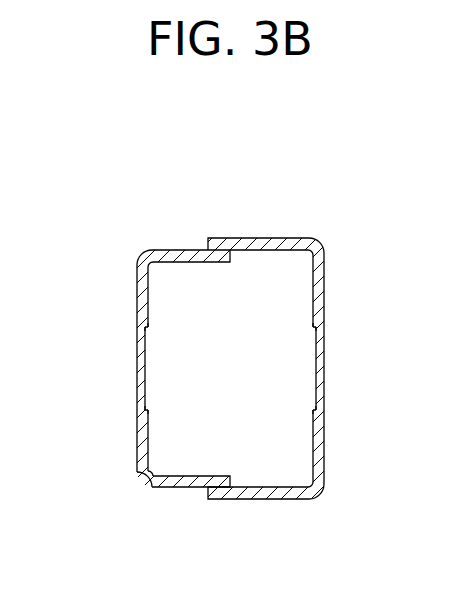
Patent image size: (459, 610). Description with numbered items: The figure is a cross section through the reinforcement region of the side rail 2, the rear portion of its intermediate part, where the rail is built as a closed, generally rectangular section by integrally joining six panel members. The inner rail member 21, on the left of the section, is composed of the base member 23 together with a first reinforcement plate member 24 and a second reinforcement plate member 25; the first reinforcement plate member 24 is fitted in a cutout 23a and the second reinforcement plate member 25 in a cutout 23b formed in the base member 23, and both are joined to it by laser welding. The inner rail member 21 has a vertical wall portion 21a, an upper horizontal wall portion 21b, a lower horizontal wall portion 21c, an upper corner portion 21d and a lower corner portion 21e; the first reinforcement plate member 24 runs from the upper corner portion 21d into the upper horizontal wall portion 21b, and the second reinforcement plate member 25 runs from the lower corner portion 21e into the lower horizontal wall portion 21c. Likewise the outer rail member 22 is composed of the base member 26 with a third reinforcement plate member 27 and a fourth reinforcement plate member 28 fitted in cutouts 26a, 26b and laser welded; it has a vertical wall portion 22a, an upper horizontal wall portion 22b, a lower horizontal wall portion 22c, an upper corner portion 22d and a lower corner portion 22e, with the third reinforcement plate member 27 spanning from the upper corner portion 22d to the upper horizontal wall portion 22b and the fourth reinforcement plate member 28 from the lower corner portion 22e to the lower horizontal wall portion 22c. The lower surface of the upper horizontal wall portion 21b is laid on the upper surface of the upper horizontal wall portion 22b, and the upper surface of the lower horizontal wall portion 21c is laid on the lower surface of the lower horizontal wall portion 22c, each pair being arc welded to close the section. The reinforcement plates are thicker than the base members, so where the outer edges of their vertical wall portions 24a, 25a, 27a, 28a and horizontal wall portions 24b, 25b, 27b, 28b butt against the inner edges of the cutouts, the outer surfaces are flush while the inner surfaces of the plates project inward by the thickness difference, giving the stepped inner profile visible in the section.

The side rail 2 is at (156, 158).
The inner rail member 21 is at (390, 325).
The vertical wall portion 21a is at (315, 383).
The upper horizontal wall portion 21b is at (280, 238).
The lower horizontal wall portion 21c is at (264, 500).
The upper corner portion 21d is at (324, 246).
The lower corner portion 21e is at (324, 490).
The outer rail member 22 is at (70, 323).
The vertical wall portion 22a is at (146, 365).
The upper horizontal wall portion 22b is at (181, 250).
The lower horizontal wall portion 22c is at (172, 488).
The upper corner portion 22d is at (137, 256).
The lower corner portion 22e is at (143, 489).
The base member 23 is at (324, 361).
The cutout 23a is at (312, 327).
The cutout 23b is at (312, 411).
The first reinforcement plate member 24 is at (324, 323).
The vertical wall portion 24a is at (324, 295).
The horizontal wall portion 24b is at (258, 244).
The second reinforcement plate member 25 is at (324, 440).
The vertical wall portion 25a is at (324, 462).
The horizontal wall portion 25b is at (258, 493).
The base member 26 is at (137, 361).
The cutout 26a is at (149, 327).
The cutout 26b is at (149, 411).
The third reinforcement plate member 27 is at (137, 323).
The vertical wall portion 27a is at (137, 302).
The horizontal wall portion 27b is at (191, 256).
The fourth reinforcement plate member 28 is at (137, 440).
The vertical wall portion 28a is at (137, 458).
The horizontal wall portion 28b is at (191, 481).